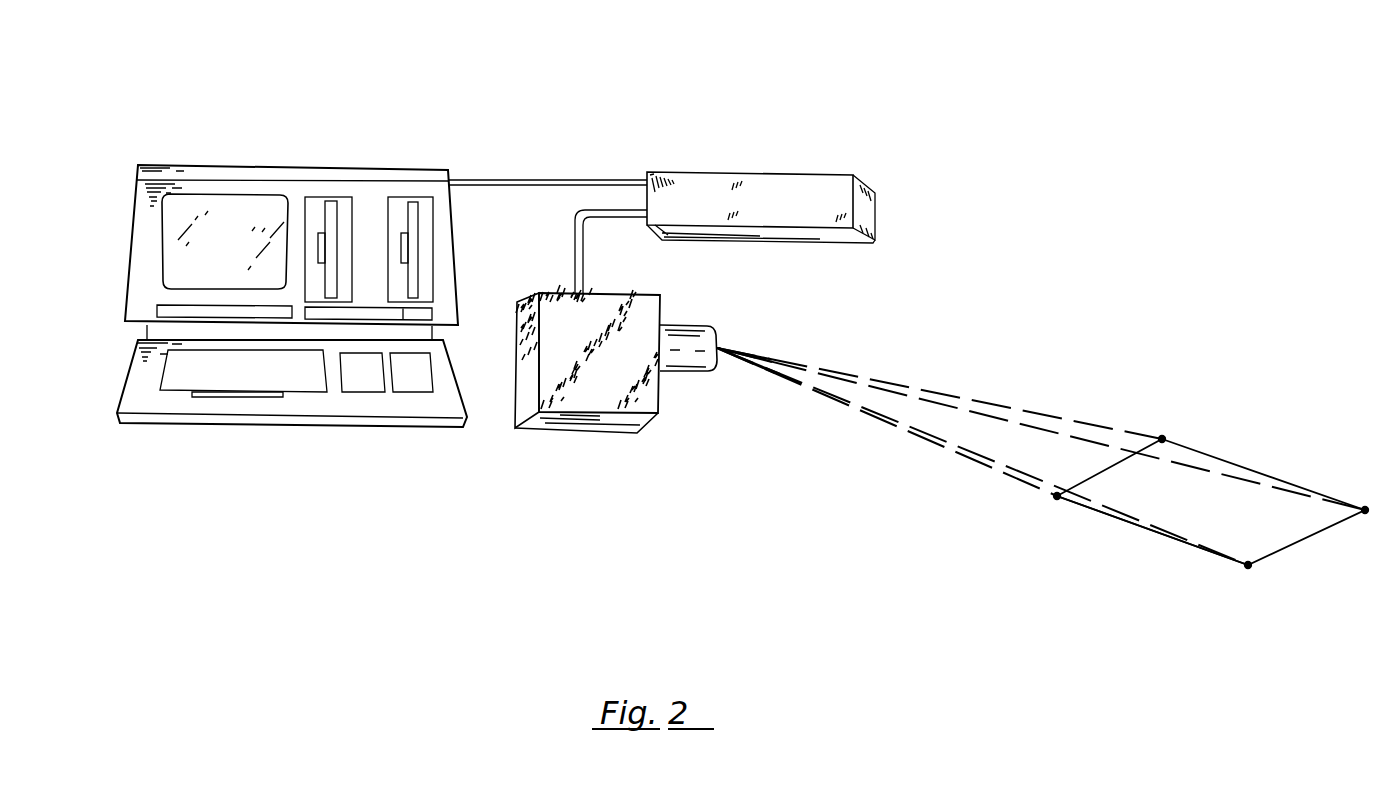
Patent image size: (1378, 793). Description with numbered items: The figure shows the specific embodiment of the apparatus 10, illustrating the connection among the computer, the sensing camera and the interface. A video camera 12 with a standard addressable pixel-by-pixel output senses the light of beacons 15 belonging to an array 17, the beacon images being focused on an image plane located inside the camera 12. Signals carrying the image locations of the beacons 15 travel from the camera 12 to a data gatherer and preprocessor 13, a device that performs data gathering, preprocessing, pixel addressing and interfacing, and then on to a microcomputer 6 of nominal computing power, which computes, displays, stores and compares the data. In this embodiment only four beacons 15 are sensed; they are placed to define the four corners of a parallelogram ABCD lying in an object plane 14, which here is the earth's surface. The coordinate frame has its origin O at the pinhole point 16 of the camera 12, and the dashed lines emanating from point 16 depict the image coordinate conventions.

The microcomputer 6 is at (355, 165).
The apparatus 10 is at (808, 73).
The video camera 12 is at (630, 293).
The data gatherer and preprocessor 13 is at (727, 173).
The object plane 14 is at (1260, 535).
The beacons 15 is at (1166, 438).
The pinhole point 16 is at (717, 346).
The array 17 is at (1157, 533).